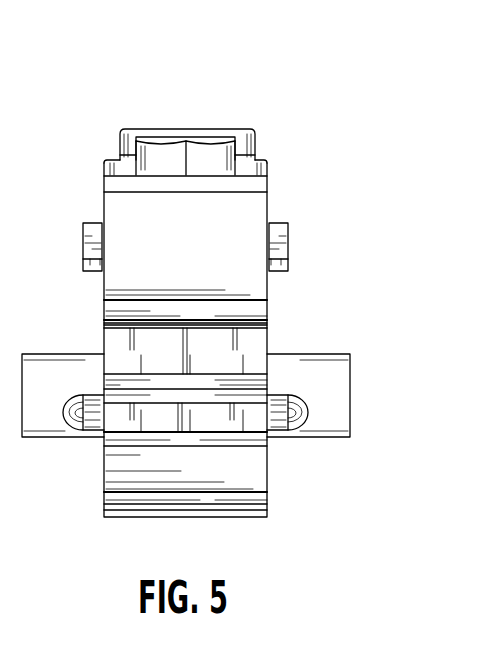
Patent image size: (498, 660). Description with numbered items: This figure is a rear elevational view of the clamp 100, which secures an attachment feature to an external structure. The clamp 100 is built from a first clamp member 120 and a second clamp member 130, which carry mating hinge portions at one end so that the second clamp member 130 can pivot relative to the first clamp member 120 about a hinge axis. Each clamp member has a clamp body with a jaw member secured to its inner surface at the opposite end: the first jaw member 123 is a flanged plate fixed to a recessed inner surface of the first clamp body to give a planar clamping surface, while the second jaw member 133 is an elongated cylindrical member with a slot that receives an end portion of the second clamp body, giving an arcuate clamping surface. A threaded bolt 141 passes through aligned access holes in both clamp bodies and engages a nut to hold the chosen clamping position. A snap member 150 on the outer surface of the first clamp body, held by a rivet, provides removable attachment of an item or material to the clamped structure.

The clamp 100 is at (338, 119).
The first clamp member 120 is at (74, 298).
The first jaw member 123 is at (315, 245).
The second clamp member 130 is at (74, 472).
The second jaw member 133 is at (371, 369).
The threaded bolt 141 is at (254, 127).
The snap member 150 is at (136, 102).